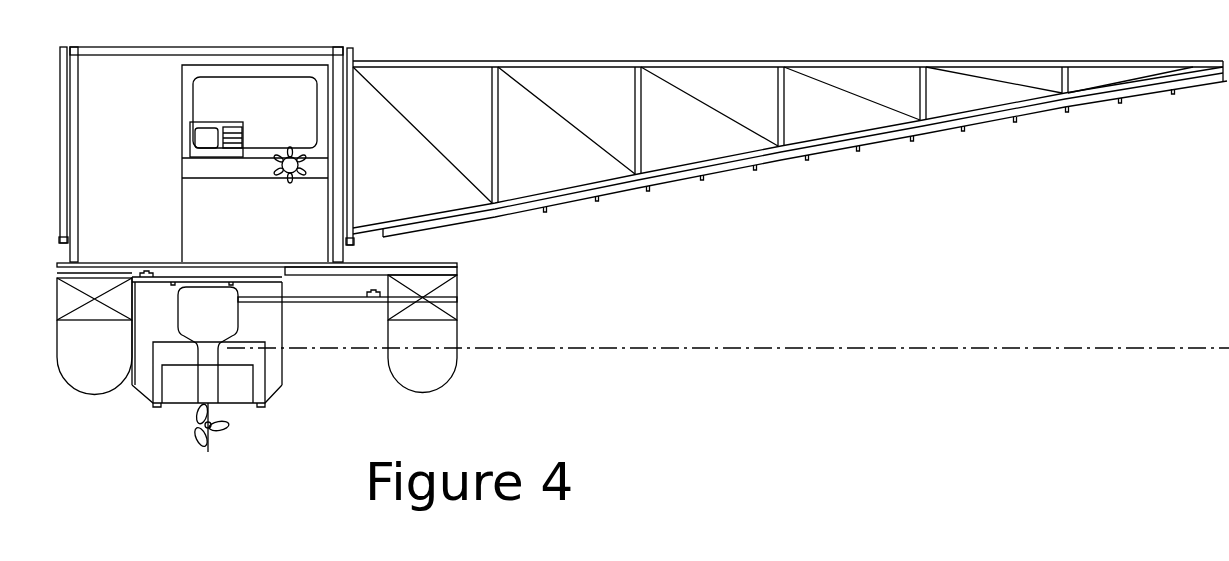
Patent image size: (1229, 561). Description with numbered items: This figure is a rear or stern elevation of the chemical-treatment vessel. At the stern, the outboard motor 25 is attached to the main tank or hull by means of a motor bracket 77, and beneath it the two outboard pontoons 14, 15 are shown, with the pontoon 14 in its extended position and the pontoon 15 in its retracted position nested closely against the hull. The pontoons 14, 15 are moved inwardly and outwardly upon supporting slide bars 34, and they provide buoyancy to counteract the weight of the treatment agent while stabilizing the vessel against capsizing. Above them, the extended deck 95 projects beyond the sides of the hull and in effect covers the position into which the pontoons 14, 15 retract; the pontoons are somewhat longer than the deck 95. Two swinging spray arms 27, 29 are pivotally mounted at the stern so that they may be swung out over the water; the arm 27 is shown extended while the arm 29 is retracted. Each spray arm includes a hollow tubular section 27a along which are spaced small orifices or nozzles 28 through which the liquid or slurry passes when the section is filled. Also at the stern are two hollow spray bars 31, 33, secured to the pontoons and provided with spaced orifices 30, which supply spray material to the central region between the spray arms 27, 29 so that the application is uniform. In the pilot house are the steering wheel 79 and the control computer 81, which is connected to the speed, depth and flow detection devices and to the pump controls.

The outboard pontoon 14 is at (457, 356).
The outboard pontoon 15 is at (58, 359).
The outboard motor 25 is at (180, 326).
The swinging spray arm 27 is at (740, 60).
The hollow tubular section 27a is at (880, 148).
The orifices or nozzles 28 is at (650, 196).
The swinging spray arm 29 is at (62, 201).
The spaced orifices 30 is at (292, 303).
The spray bar 31 is at (151, 277).
The spray bar 33 is at (293, 298).
The supporting slide bar 34 is at (415, 263).
The motor bracket 77 is at (264, 355).
The wheel 79 is at (287, 176).
The control computer 81 is at (213, 122).
The extended deck 95 is at (89, 266).